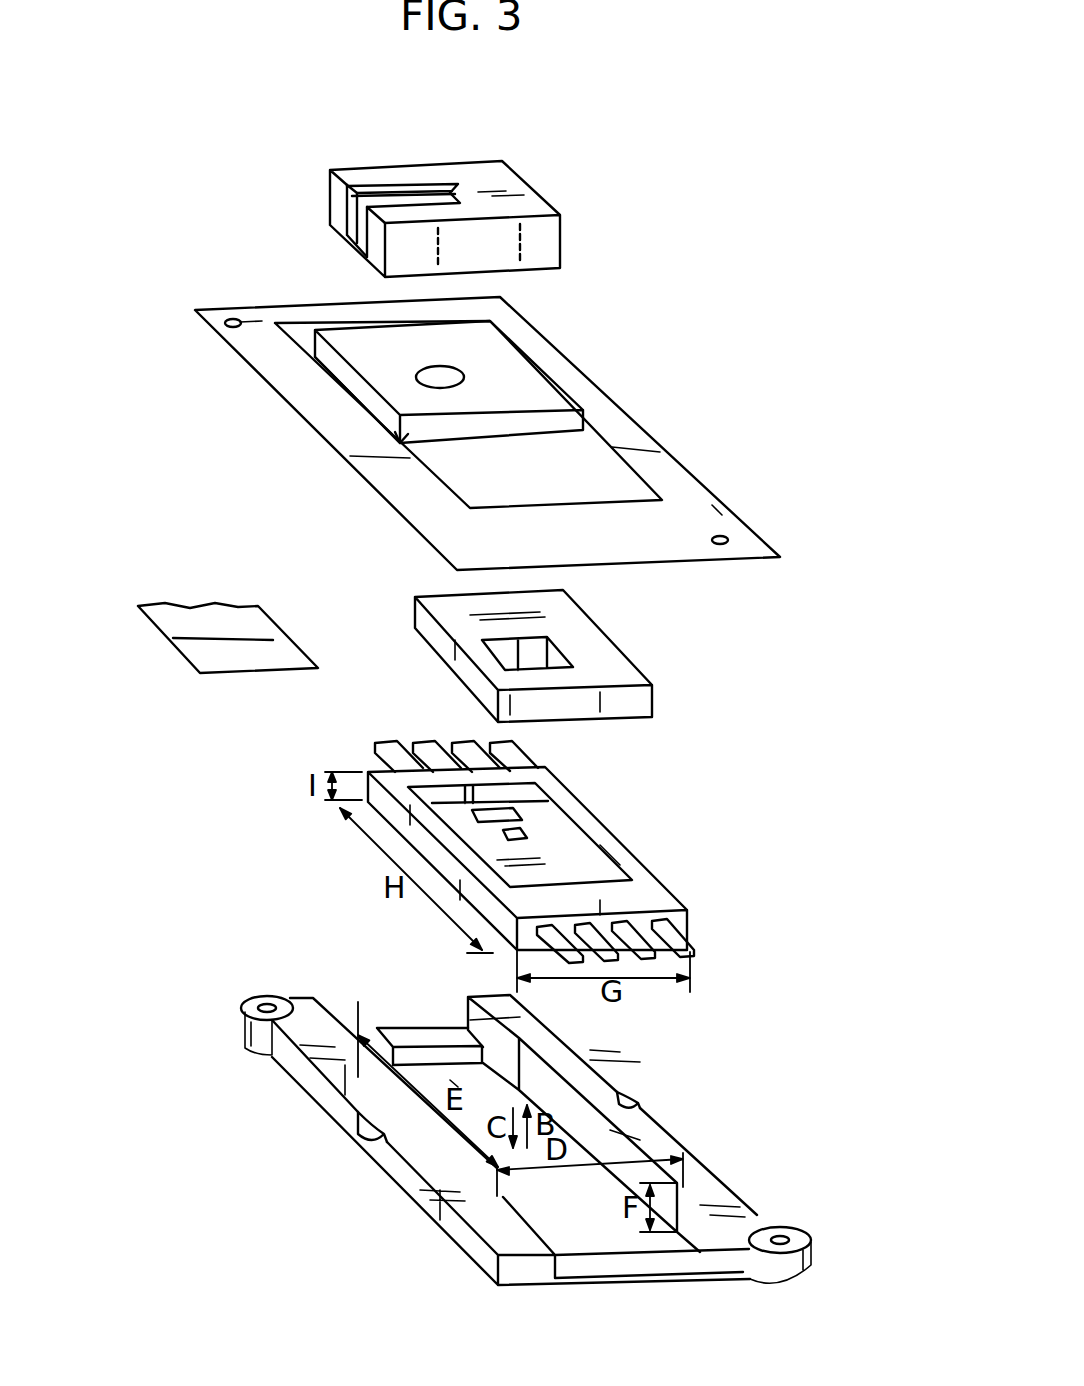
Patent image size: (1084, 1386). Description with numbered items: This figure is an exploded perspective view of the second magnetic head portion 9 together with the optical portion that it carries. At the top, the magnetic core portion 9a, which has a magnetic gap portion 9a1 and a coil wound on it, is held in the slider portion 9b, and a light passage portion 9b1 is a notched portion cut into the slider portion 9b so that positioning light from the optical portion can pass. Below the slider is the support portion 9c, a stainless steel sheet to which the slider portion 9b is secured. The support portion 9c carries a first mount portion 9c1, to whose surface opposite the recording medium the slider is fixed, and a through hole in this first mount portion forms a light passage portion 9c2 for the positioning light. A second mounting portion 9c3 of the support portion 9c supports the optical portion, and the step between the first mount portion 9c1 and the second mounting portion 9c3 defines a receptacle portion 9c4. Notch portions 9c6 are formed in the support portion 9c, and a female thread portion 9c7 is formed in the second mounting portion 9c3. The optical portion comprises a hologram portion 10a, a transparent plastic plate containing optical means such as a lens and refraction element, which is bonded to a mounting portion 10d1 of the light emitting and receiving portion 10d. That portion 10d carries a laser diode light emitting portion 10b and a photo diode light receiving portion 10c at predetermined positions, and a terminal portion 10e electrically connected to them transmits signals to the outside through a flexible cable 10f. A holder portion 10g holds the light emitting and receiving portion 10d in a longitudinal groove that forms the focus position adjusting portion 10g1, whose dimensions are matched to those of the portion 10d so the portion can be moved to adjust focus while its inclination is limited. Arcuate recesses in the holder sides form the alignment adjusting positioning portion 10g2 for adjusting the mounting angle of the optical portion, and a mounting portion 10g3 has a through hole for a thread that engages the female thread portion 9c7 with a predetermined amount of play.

The second magnetic head portion 9 is at (512, 180).
The magnetic core portion 9a is at (441, 183).
The magnetic gap portion 9a1 is at (415, 183).
The slider portion 9b is at (540, 200).
The light passage portion 9b1 is at (368, 200).
The support portion 9c is at (635, 418).
The first mount portion 9c1 is at (510, 342).
The light passage portion 9c2 is at (452, 380).
The second mounting portion 9c3 is at (717, 510).
The receptacle portion 9c4 is at (400, 445).
The notch portion 9c6 is at (302, 325).
The female thread portion 9c7 is at (233, 319).
The hologram portion 10a is at (600, 642).
The light emitting portion 10b is at (520, 830).
The light receiving portion 10c is at (520, 812).
The light emitting and receiving portion 10d is at (612, 828).
The mounting portion 10d1 is at (614, 852).
The terminal portion 10e is at (376, 742).
The flexible cable 10f is at (282, 630).
The holder portion 10g is at (755, 1222).
The focus position adjusting portion 10g1 is at (638, 1148).
The alignment adjusting positioning portion 10g2 is at (362, 1122).
The mounting portion 10g3 is at (267, 997).